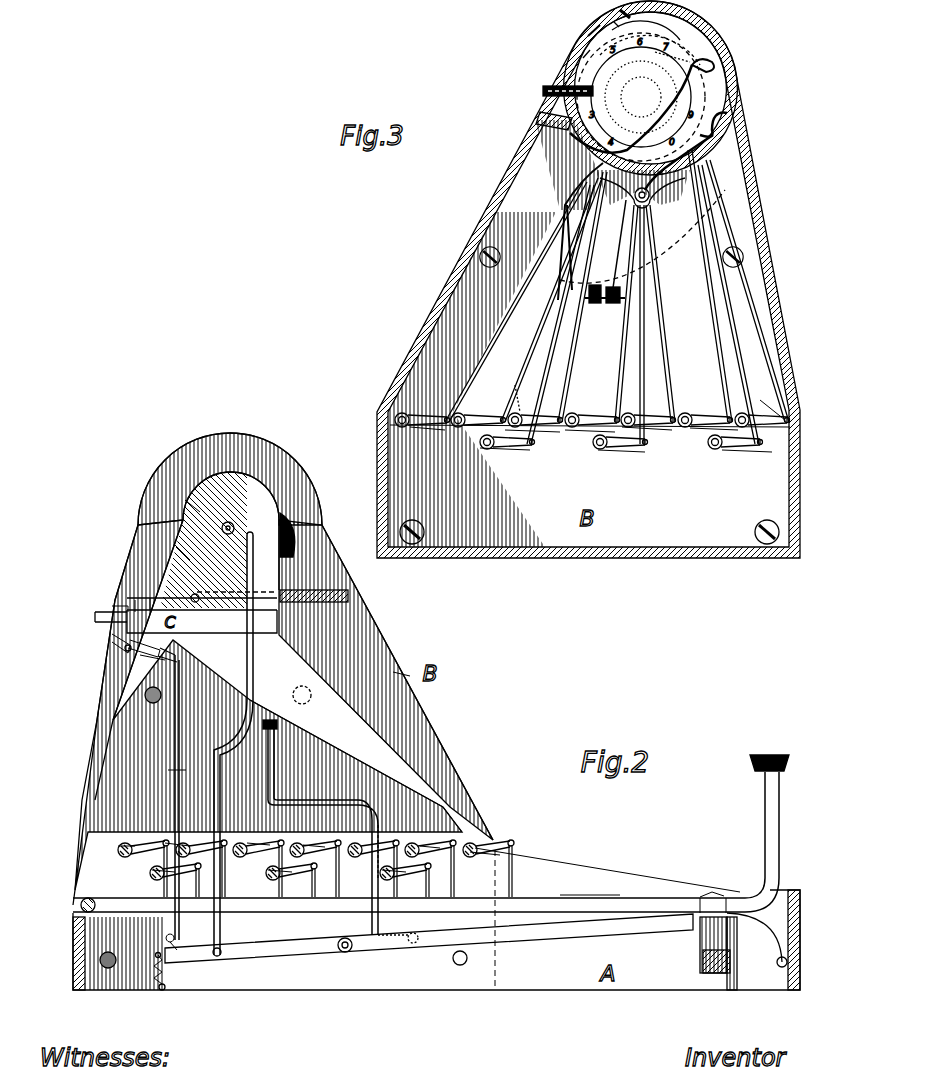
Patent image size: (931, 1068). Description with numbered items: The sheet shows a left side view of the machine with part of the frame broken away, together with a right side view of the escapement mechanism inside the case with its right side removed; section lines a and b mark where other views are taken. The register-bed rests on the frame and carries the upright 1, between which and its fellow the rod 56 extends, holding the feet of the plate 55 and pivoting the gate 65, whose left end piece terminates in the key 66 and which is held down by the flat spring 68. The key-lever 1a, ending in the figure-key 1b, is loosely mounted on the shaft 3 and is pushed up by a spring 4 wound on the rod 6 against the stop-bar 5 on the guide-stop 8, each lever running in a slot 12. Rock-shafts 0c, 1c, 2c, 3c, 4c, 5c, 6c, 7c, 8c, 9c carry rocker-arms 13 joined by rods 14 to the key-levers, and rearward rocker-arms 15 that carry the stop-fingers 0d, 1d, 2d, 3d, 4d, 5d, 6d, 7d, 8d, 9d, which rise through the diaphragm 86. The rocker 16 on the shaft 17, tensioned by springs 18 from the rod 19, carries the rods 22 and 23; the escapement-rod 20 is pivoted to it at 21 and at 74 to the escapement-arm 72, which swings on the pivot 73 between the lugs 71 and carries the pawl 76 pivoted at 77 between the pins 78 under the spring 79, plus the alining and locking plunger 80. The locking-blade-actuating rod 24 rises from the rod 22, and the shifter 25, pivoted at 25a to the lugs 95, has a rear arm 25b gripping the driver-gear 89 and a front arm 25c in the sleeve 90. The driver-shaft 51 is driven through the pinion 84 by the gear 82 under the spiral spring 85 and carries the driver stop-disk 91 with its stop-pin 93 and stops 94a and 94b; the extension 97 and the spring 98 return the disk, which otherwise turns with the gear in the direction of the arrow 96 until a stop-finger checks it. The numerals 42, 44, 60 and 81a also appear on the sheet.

In FIG. 2, the upright 1 is at (185, 505).
In FIG. 2, the key-lever 1a is at (588, 897).
In FIG. 2, the figure-key 1b is at (771, 757).
In FIG. 2, the shaft 3 is at (73, 905).
In FIG. 2, the spring 4 is at (795, 920).
In FIG. 2, the stop-bar 5 is at (698, 890).
In FIG. 2, the rod 6 is at (790, 962).
In FIG. 2, the guide-stop 8 is at (705, 960).
In FIG. 2, the slot 12 is at (702, 935).
In FIG. 2, the rocker-arm 13 is at (270, 872).
In FIG. 2, the rod 14 is at (513, 892).
In FIG. 3, the rocker-arm 15 is at (757, 449).
In FIG. 2, the rocker 16 is at (538, 930).
In FIG. 2, the shaft 17 is at (347, 952).
In FIG. 2, the spring 18 is at (157, 965).
In FIG. 2, the rod 19 is at (165, 988).
In FIG. 2, the indicator-ring escapement-rod 20 is at (175, 777).
In FIG. 2, the pivot 21 is at (165, 940).
In FIG. 2, the rod 22 is at (218, 958).
In FIG. 2, the rod 23 is at (413, 945).
In FIG. 2, the locking-blade-actuating rod 24 is at (180, 745).
In FIG. 3, the shifter 25 is at (569, 240).
In FIG. 2, the shifter 25 is at (300, 801).
In FIG. 3, the pivot 25a is at (588, 293).
In FIG. 3, the rear arm 25b is at (717, 70).
In FIG. 3, the front arm 25c is at (590, 35).
In FIG. 2, the arch opening 42 is at (192, 448).
In FIG. 2, the casing edge 44 is at (290, 470).
In FIG. 3, the driver-shaft 51 is at (585, 60).
In FIG. 2, the plate 55 is at (232, 470).
In FIG. 2, the rod 56 is at (175, 545).
In FIG. 2, the pawl 60 is at (293, 527).
In FIG. 2, the gate 65 is at (160, 598).
In FIG. 2, the key 66 is at (348, 596).
In FIG. 2, the flat spring 68 is at (263, 587).
In FIG. 2, the lug 71 is at (128, 648).
In FIG. 2, the escapement-arm 72 is at (140, 660).
In FIG. 2, the pivot 73 is at (133, 655).
In FIG. 2, the pivot 74 is at (180, 653).
In FIG. 2, the pawl 76 is at (112, 640).
In FIG. 2, the pivot 77 is at (100, 618).
In FIG. 2, the pin 78 is at (118, 612).
In FIG. 2, the spring 79 is at (140, 605).
In FIG. 2, the alining and locking plunger 80 is at (187, 612).
In FIG. 3, the bracket 81a is at (650, 198).
In FIG. 3, the gear 82 is at (557, 183).
In FIG. 3, the pinion 84 is at (683, 20).
In FIG. 3, the spiral spring 85 is at (683, 265).
In FIG. 3, the diaphragm 86 is at (700, 145).
In FIG. 3, the driver-gear 89 is at (705, 43).
In FIG. 3, the sleeve 90 is at (690, 37).
In FIG. 3, the driver stop-disk 91 is at (700, 60).
In FIG. 3, the stop-pin 93 is at (560, 86).
In FIG. 3, the stop 94a is at (590, 150).
In FIG. 3, the stop 94b is at (723, 125).
In FIG. 3, the lug 95 is at (612, 267).
In FIG. 3, the arrow 96 is at (615, 22).
In FIG. 3, the extension 97 is at (548, 118).
In FIG. 3, the spring 98 is at (690, 22).
In FIG. 3, the rock-shaft 0c is at (772, 395).
In FIG. 2, the rock-shaft 0c is at (118, 848).
In FIG. 3, the rock-shaft 1c is at (626, 413).
In FIG. 2, the rock-shaft 1c is at (255, 842).
In FIG. 3, the rock-shaft 2c is at (515, 385).
In FIG. 2, the rock-shaft 2c is at (377, 812).
In FIG. 3, the rock-shaft 3c is at (430, 426).
In FIG. 2, the rock-shaft 3c is at (510, 870).
In FIG. 3, the rock-shaft 4c is at (750, 450).
In FIG. 2, the rock-shaft 4c is at (152, 874).
In FIG. 3, the rock-shaft 5c is at (603, 450).
In FIG. 2, the rock-shaft 5c is at (270, 876).
In FIG. 3, the rock-shaft 6c is at (512, 455).
In FIG. 2, the rock-shaft 6c is at (382, 880).
In FIG. 3, the rock-shaft 7c is at (710, 445).
In FIG. 2, the rock-shaft 7c is at (175, 840).
In FIG. 3, the rock-shaft 8c is at (578, 430).
In FIG. 2, the rock-shaft 8c is at (300, 845).
In FIG. 3, the rock-shaft 9c is at (482, 446).
In FIG. 2, the rock-shaft 9c is at (435, 845).
In FIG. 3, the stop-finger 0d is at (752, 300).
In FIG. 3, the stop-finger 1d is at (714, 315).
In FIG. 3, the stop-finger 2d is at (546, 314).
In FIG. 3, the stop-finger 3d is at (513, 307).
In FIG. 3, the stop-finger 4d is at (762, 337).
In FIG. 3, the stop-finger 5d is at (764, 345).
In FIG. 3, the stop-finger 6d is at (624, 342).
In FIG. 3, the stop-finger 7d is at (742, 372).
In FIG. 3, the stop-finger 8d is at (665, 369).
In FIG. 3, the stop-finger 9d is at (573, 350).
In FIG. 2, the section line a is at (333, 630).
In FIG. 3, the section line b is at (527, 95).